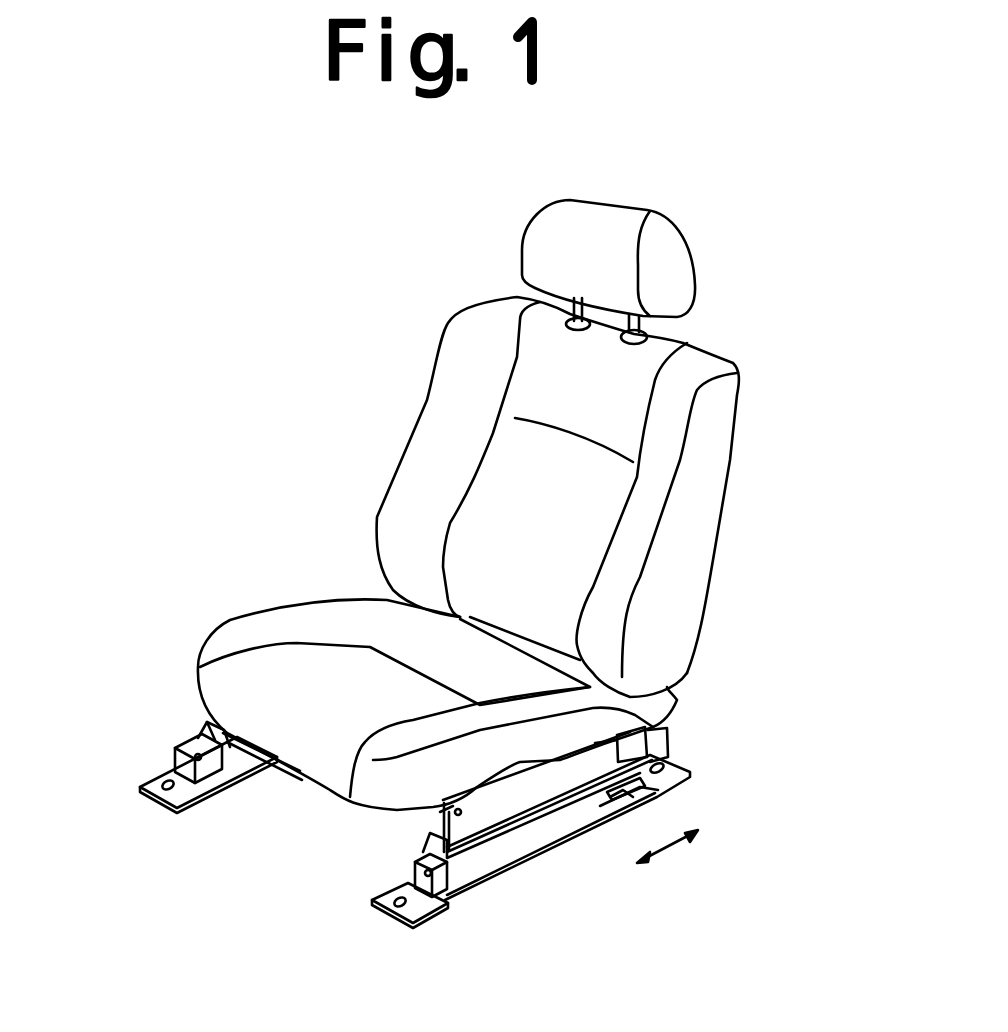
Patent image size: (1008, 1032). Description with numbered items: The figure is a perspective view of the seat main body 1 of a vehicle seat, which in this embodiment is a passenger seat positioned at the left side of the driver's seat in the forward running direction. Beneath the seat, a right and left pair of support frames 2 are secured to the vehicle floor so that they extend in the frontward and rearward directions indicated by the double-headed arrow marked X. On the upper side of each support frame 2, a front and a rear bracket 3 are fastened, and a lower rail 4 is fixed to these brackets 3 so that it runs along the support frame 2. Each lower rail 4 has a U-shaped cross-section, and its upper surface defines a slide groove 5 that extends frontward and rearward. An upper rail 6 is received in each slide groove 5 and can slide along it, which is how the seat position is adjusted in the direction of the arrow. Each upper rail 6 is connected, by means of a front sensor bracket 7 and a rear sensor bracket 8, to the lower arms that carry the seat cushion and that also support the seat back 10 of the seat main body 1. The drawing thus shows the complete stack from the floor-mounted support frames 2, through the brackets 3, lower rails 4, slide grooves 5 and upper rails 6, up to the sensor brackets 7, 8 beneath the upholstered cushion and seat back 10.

The seat main body 1 is at (356, 440).
The support frame 2 is at (167, 803).
The bracket 3 is at (190, 745).
The lower rail 4 is at (237, 760).
The slide groove 5 is at (200, 723).
The upper rail 6 is at (563, 787).
The front sensor bracket 7 is at (447, 813).
The rear sensor bracket 8 is at (667, 745).
The seat back 10 is at (707, 503).